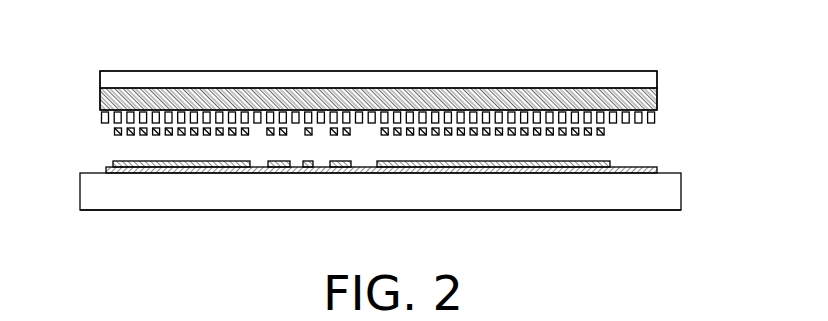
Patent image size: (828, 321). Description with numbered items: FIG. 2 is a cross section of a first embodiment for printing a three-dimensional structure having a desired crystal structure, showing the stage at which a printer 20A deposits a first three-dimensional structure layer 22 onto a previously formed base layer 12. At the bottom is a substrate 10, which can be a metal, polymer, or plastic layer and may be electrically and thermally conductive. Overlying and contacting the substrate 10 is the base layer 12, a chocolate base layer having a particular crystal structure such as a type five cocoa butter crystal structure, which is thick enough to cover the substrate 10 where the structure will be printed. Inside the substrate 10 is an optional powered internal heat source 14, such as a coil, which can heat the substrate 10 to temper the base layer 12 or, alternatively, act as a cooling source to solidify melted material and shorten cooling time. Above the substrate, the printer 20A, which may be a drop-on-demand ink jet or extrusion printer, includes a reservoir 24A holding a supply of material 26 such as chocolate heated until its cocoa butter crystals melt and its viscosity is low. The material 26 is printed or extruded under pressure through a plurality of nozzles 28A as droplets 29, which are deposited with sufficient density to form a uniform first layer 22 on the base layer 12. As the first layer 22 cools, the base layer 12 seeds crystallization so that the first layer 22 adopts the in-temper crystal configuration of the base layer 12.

The substrate 10 is at (80, 190).
The base layer 12 is at (118, 173).
The powered internal heat source 14 is at (590, 210).
The first 3D structure layer 22 is at (175, 173).
The printer 20A is at (378, 70).
The reservoir 24A is at (540, 82).
The material 26 is at (215, 88).
The nozzles 28A is at (638, 124).
The droplets 29 is at (127, 125).